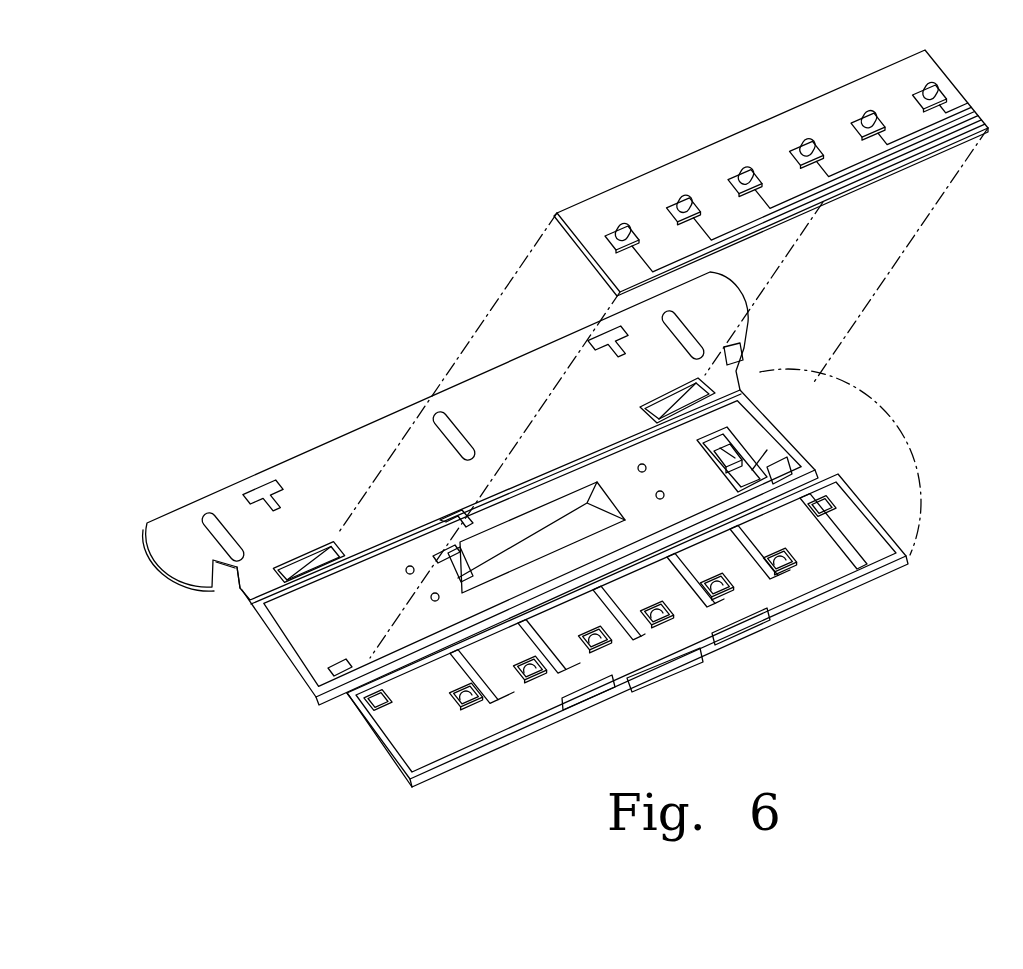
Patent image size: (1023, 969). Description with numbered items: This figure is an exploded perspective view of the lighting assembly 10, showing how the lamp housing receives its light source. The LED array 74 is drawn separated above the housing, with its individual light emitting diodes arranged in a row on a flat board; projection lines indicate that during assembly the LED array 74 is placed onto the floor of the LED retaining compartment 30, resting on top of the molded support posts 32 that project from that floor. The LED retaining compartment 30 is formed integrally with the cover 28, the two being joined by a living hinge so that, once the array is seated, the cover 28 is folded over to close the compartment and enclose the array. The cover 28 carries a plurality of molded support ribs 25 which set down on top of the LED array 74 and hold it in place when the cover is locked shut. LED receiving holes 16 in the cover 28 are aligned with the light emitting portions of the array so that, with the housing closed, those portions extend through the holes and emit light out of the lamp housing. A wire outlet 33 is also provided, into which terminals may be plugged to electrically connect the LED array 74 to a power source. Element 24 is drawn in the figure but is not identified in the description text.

The lighting assembly 10 is at (378, 172).
The LED array 74 is at (632, 192).
The wire outlet 33 is at (440, 562).
The molded support posts 32 is at (648, 467).
The LED retaining compartment 30 is at (752, 443).
The cover 28 is at (855, 558).
The terminal housing 24 is at (838, 572).
The molded support ribs 25 is at (560, 682).
The LED receiving holes 16 is at (456, 708).